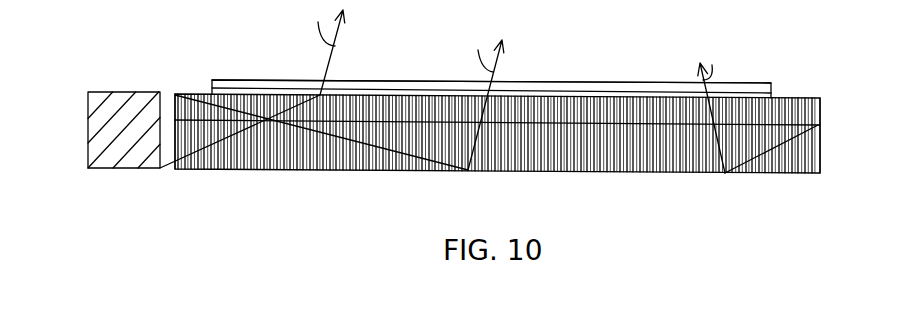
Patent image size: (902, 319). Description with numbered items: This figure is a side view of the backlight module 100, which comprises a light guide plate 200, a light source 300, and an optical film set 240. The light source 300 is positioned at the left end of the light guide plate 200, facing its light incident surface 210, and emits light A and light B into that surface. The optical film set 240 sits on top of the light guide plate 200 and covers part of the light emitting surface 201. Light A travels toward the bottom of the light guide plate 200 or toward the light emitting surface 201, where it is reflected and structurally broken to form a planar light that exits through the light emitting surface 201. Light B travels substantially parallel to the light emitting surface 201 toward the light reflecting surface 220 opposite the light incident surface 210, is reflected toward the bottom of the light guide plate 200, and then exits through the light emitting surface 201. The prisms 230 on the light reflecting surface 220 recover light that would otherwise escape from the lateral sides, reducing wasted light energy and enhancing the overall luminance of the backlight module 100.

The backlight module 100 is at (103, 44).
The light guide plate 200 is at (516, 150).
The light emitting surface 201 is at (577, 97).
The light incident surface 210 is at (173, 157).
The light reflecting surface 220 is at (822, 108).
The prisms 230 is at (412, 110).
The optical film set 240 is at (752, 95).
The light source 300 is at (100, 126).